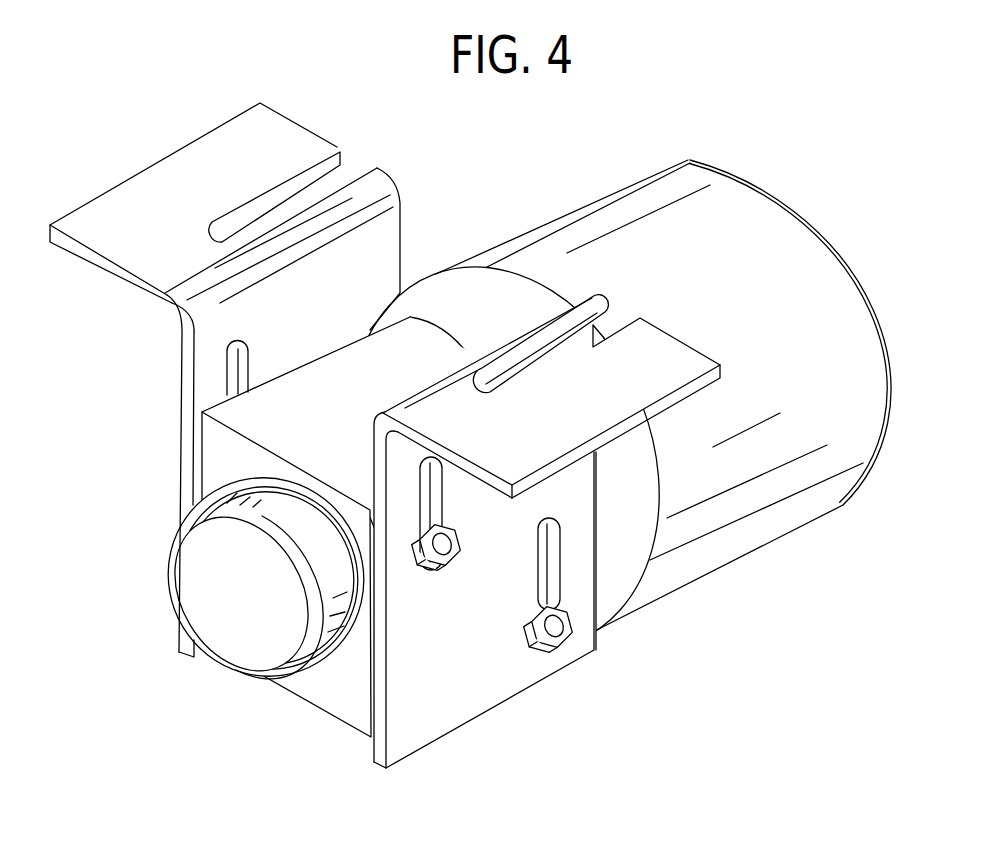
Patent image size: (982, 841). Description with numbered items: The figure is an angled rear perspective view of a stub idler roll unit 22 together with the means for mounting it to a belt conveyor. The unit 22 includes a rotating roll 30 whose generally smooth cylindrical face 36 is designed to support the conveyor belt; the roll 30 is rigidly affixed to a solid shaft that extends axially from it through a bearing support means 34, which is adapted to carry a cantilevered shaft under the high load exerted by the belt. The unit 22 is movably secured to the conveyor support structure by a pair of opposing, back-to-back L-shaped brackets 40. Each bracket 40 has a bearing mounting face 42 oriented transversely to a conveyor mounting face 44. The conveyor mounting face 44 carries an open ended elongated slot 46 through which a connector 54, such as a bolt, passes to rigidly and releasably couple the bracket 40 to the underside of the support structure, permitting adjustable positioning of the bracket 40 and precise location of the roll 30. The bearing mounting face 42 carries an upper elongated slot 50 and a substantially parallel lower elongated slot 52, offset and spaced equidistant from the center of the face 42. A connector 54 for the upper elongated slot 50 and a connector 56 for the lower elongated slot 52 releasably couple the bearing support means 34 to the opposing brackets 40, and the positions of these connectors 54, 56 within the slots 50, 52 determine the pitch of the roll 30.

The stub idler roll unit 22 is at (699, 627).
The rotating roll 30 is at (773, 207).
The bearing support means 34 is at (326, 416).
The cylindrical face 36 is at (752, 398).
The L-shaped bracket 40 is at (210, 358).
The bearing mounting face 42 is at (383, 250).
The conveyor mounting face 44 is at (178, 173).
The open ended elongated slot 46 is at (342, 173).
The upper elongated slot 50 is at (433, 502).
The lower elongated slot 52 is at (550, 563).
The connector 54 is at (447, 552).
The connector 56 is at (537, 642).